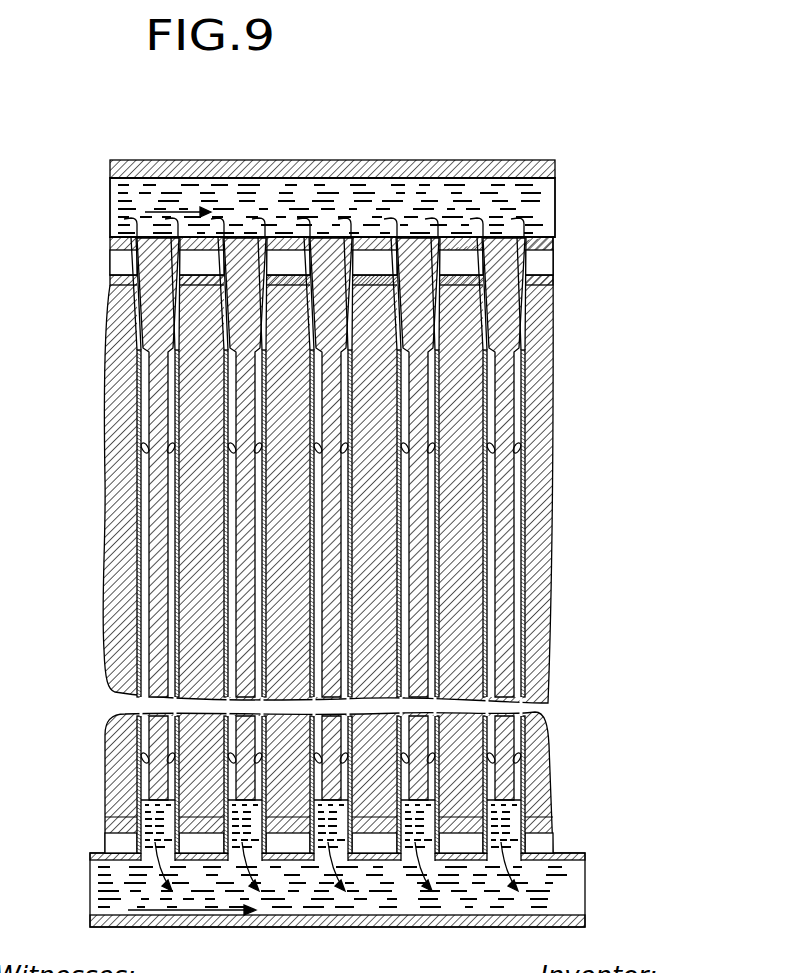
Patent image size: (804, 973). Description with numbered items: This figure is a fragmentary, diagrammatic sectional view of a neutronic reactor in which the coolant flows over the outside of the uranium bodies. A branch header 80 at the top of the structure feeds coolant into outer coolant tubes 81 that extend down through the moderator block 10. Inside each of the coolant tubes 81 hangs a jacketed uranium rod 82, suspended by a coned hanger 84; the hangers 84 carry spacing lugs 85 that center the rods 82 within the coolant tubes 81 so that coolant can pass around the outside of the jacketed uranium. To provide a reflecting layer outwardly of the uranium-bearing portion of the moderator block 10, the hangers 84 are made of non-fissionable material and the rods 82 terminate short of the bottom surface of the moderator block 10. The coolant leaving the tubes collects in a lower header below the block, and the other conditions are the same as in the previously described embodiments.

The moderator block 10 is at (120, 562).
The branch header 80 is at (117, 196).
The outer coolant tubes 81 is at (108, 262).
The jacketed uranium rods 82 is at (152, 395).
The coned hangers 84 is at (112, 279).
The spacing lugs 85 is at (134, 296).